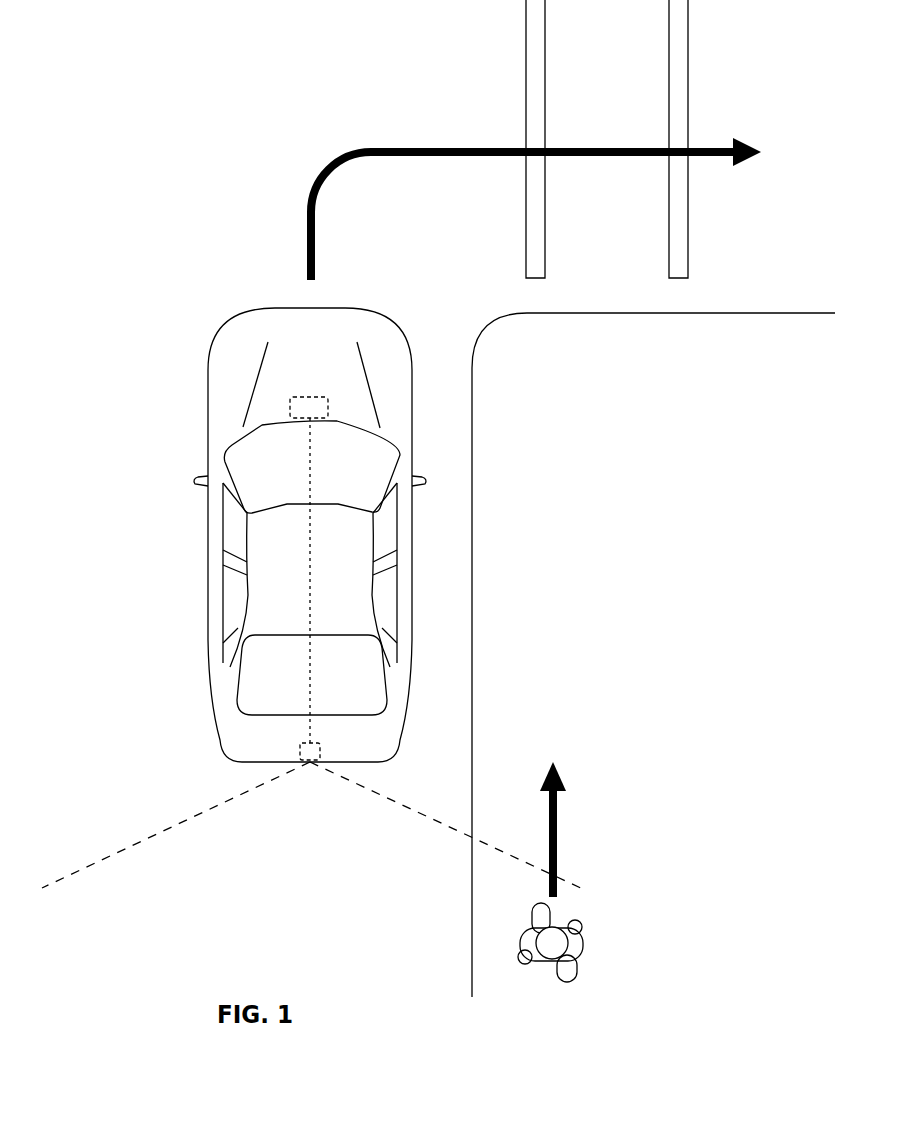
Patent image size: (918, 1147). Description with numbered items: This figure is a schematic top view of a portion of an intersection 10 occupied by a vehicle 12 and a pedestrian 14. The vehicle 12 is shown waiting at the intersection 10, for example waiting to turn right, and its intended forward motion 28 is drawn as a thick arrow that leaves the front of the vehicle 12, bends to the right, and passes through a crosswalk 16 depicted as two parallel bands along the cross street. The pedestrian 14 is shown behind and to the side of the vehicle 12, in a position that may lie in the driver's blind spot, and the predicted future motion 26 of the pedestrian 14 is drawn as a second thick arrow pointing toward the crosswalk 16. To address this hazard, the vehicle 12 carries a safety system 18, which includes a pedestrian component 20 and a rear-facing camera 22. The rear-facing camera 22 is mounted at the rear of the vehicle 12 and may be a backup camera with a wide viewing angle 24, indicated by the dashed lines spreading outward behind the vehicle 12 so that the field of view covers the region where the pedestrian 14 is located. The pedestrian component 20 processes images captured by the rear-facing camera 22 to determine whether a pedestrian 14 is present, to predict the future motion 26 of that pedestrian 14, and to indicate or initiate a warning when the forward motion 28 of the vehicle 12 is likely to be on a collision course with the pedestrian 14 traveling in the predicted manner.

The intersection 10 is at (214, 104).
The vehicle 12 is at (153, 352).
The pedestrian 14 is at (594, 910).
The crosswalk 16 is at (622, 234).
The safety system 18 is at (321, 375).
The pedestrian component 20 is at (308, 383).
The rear-facing camera 22 is at (302, 748).
The wide viewing angle 24 is at (187, 818).
The future motion 26 is at (558, 813).
The forward motion 28 is at (490, 147).